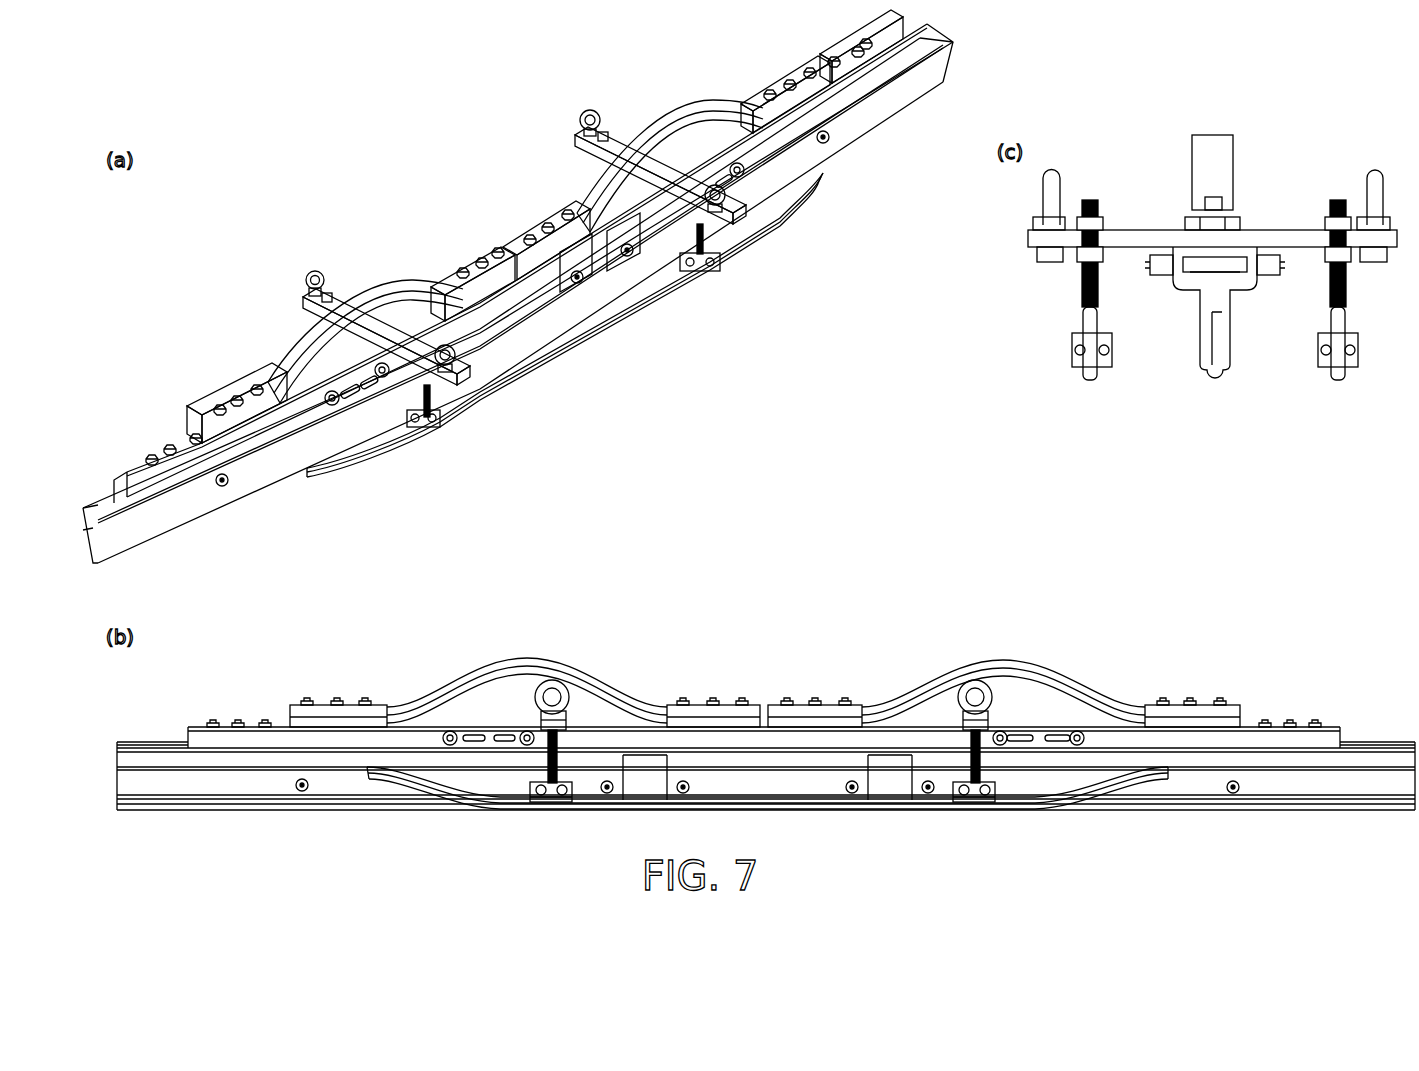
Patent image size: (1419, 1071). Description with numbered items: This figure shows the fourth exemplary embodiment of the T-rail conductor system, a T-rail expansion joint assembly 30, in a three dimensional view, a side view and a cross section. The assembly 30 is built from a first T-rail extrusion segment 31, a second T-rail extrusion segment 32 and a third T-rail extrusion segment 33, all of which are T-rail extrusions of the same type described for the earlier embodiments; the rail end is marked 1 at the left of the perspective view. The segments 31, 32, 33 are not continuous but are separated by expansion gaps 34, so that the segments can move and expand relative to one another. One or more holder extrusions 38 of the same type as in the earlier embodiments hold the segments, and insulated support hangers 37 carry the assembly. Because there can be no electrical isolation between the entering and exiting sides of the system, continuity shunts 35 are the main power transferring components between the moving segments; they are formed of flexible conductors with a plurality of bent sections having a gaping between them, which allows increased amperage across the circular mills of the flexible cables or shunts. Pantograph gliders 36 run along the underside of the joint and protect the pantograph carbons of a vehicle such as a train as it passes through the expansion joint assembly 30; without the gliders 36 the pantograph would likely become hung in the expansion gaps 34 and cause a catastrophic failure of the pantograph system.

The rail 1 is at (98, 504).
The T-rail expansion joint assembly 30 is at (500, 120).
The first T-rail extrusion segment 31 is at (147, 527).
The second T-rail extrusion segment 32 is at (525, 307).
The third T-rail extrusion segment 33 is at (890, 98).
The expansion gap 34 is at (600, 263).
The continuity shunt 35 is at (375, 292).
The pantograph glider 36 is at (333, 480).
The insulated support hanger 37 is at (315, 271).
The holder extrusion 38 is at (147, 463).